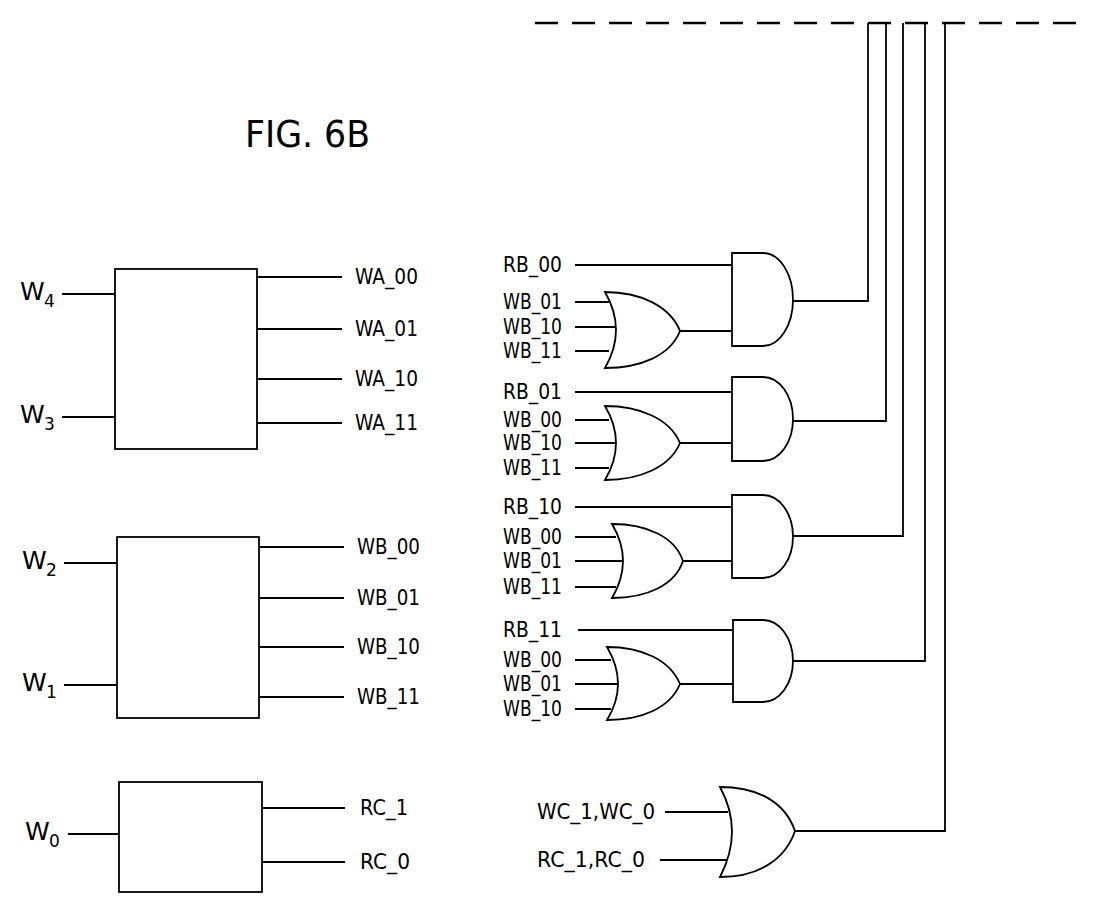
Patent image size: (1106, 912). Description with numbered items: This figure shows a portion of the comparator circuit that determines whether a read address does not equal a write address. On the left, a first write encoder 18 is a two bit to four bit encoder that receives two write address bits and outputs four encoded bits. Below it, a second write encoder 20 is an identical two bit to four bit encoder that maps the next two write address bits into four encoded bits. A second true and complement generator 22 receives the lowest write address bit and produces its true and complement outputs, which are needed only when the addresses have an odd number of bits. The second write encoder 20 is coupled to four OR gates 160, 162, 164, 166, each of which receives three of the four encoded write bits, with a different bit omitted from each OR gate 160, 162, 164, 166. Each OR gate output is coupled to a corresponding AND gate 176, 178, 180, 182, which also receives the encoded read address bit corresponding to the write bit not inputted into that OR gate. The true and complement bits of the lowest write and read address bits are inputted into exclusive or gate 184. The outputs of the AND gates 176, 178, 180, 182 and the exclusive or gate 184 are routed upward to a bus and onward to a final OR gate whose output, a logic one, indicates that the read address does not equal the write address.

The first write encoder 18 is at (248, 268).
The second write encoder 20 is at (250, 538).
The second true and complement generator 22 is at (262, 790).
The OR gate 160 is at (663, 343).
The OR gate 162 is at (663, 460).
The OR gate 164 is at (665, 578).
The OR gate 166 is at (665, 701).
The AND gate 176 is at (785, 311).
The AND gate 178 is at (779, 430).
The AND gate 180 is at (781, 552).
The AND gate 182 is at (786, 673).
The exclusive or (XOR) gate 184 is at (782, 838).